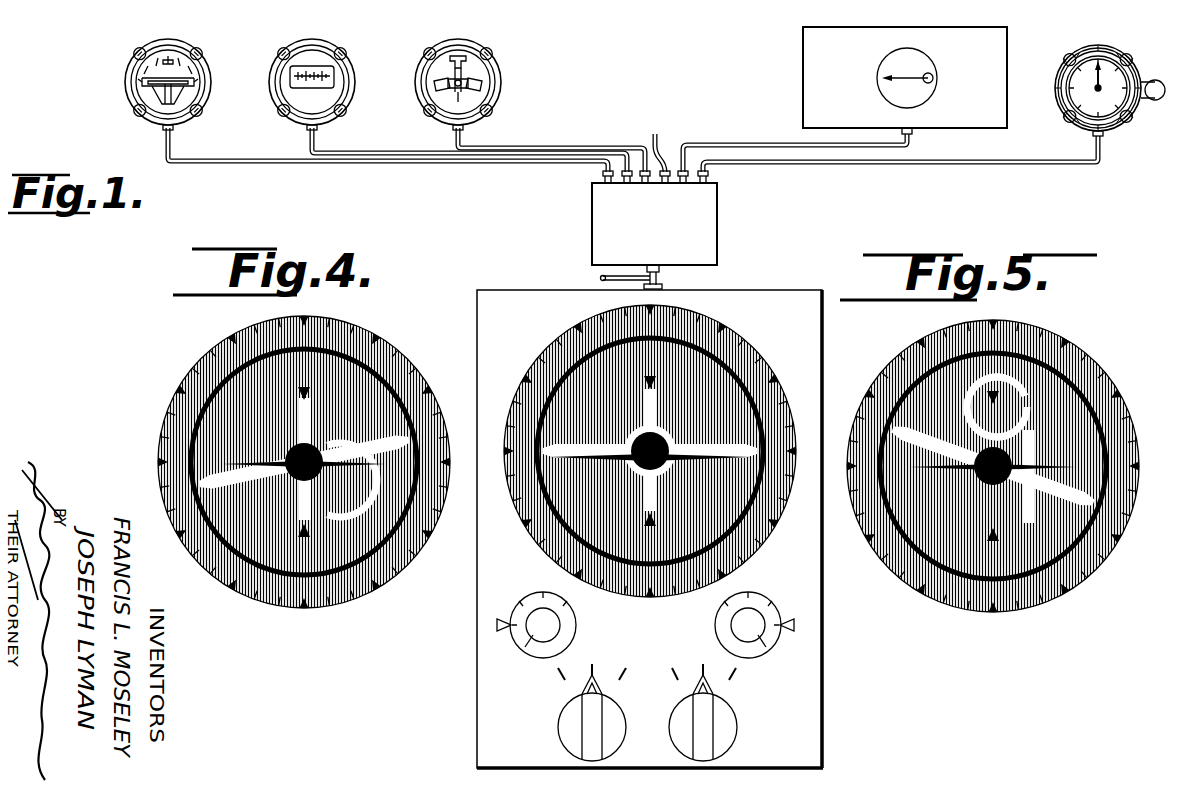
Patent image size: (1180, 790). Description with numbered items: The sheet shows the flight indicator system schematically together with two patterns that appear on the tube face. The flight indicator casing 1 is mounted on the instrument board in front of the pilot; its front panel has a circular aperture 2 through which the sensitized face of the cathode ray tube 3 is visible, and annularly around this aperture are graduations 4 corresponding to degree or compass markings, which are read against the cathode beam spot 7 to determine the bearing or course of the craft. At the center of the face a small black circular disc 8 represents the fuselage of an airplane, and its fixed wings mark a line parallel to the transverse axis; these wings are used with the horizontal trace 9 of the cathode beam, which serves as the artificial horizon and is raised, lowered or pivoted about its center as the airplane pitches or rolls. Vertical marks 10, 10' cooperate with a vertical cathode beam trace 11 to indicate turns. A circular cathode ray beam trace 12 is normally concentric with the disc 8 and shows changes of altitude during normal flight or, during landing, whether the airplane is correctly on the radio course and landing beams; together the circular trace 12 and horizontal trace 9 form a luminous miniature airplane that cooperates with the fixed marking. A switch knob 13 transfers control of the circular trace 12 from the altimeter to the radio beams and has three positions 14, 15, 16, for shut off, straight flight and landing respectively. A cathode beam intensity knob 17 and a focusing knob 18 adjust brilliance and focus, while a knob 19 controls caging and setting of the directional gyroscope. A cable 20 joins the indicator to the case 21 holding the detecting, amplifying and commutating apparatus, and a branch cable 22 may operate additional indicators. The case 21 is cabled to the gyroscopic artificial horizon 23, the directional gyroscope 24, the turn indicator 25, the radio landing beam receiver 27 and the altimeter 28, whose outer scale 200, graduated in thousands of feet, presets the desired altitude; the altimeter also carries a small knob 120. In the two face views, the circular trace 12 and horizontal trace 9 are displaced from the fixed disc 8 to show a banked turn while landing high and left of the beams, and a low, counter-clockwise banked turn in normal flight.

In FIG. 1, the flight indicator casing 1 is at (478, 291).
In FIG. 1, the circular aperture 2 is at (625, 451).
In FIG. 1, the cathode ray tube 3 is at (611, 451).
In FIG. 1, the graduations 4 is at (615, 451).
In FIG. 1, the cathode beam spot 7 is at (650, 465).
In FIG. 4, the cathode beam spot 7 is at (288, 462).
In FIG. 5, the cathode beam spot 7 is at (1005, 466).
In FIG. 1, the black circular disc 8 is at (629, 364).
In FIG. 4, the black circular disc 8 is at (230, 484).
In FIG. 5, the black circular disc 8 is at (940, 531).
In FIG. 1, the horizontal trace 9 is at (697, 418).
In FIG. 4, the horizontal trace 9 is at (315, 383).
In FIG. 5, the horizontal trace 9 is at (1001, 540).
In FIG. 1, the vertical mark 10 is at (592, 325).
In FIG. 4, the vertical mark 10 is at (265, 351).
In FIG. 5, the vertical mark 10 is at (951, 356).
In FIG. 1, the vertical mark 10' is at (626, 569).
In FIG. 4, the vertical mark 10' is at (285, 576).
In FIG. 5, the vertical mark 10' is at (966, 586).
In FIG. 1, the vertical cathode beam trace 11 is at (627, 481).
In FIG. 4, the vertical cathode beam trace 11 is at (298, 496).
In FIG. 5, the vertical cathode beam trace 11 is at (1023, 436).
In FIG. 1, the circular cathode ray beam trace 12 is at (723, 504).
In FIG. 4, the circular cathode ray beam trace 12 is at (360, 533).
In FIG. 5, the circular cathode ray beam trace 12 is at (1044, 371).
In FIG. 1, the switch knob 13 is at (735, 728).
In FIG. 1, the knob position 14 is at (618, 664).
In FIG. 1, the knob position 15 is at (656, 659).
In FIG. 1, the knob position 16 is at (689, 667).
In FIG. 1, the cathode beam intensity knob 17 is at (533, 636).
In FIG. 1, the focusing knob 18 is at (766, 646).
In FIG. 1, the knob 19 is at (560, 730).
In FIG. 1, the cable 20 is at (659, 282).
In FIG. 1, the case 21 is at (717, 220).
In FIG. 1, the branch cable 22 is at (602, 277).
In FIG. 1, the gyroscopic artificial horizon 23 is at (150, 75).
In FIG. 1, the directional gyroscope 24 is at (290, 96).
In FIG. 1, the turn indicator 25 is at (780, 394).
In FIG. 1, the radio landing beam receiver 27 is at (905, 80).
In FIG. 1, the altimeter 28 is at (1114, 92).
In FIG. 1, the setting knob 120 is at (1160, 77).
In FIG. 1, the outer scale 200 is at (1095, 76).